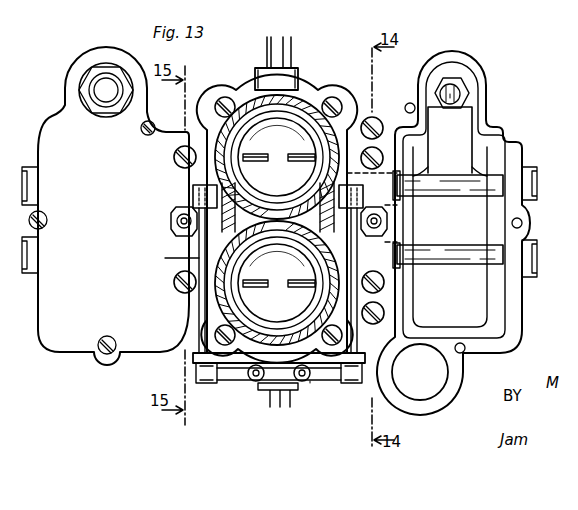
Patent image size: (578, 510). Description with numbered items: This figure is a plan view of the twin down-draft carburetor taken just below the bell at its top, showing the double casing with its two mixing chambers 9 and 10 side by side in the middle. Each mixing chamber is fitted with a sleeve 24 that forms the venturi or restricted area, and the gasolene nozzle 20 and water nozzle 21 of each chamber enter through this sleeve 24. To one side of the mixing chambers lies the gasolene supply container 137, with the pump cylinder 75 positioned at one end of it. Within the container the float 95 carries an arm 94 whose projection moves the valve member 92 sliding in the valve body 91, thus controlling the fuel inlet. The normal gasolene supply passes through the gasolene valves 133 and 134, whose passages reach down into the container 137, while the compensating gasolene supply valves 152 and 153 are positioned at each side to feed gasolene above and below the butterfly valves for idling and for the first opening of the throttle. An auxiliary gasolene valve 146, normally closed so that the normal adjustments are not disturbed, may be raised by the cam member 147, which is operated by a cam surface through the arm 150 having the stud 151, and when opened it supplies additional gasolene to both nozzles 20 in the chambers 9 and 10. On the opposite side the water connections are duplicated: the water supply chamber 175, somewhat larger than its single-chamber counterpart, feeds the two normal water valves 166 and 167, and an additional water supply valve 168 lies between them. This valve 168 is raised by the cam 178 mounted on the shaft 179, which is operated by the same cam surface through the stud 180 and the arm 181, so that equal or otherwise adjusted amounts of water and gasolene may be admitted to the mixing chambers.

The mixing chamber 9 is at (277, 283).
The mixing chamber 10 is at (277, 157).
The gasolene nozzle 20 is at (299, 162).
The water nozzle 21 is at (257, 162).
The sleeve 24 is at (256, 118).
The pump cylinder 75 is at (412, 390).
The valve body 91 is at (466, 92).
The valve member 92 is at (458, 82).
The arm 94 is at (468, 160).
The float 95 is at (448, 250).
The gasolene valve 133 is at (386, 282).
The gasolene valve 134 is at (398, 156).
The gasolene supply container 137 is at (497, 146).
The valve 146 is at (388, 221).
The cam member 147 is at (400, 211).
The arm 150 is at (332, 382).
The stud 151 is at (310, 384).
The compensating gasolene supply valve 152 is at (386, 313).
The compensating gasolene supply valve 153 is at (377, 116).
The water valve 166 is at (173, 160).
The water valve 167 is at (173, 284).
The additional water supply valve 168 is at (172, 228).
The water supply chamber 175 is at (82, 330).
The cam 178 is at (176, 208).
The shaft 179 is at (166, 259).
The stud 180 is at (256, 383).
The arm 181 is at (230, 371).